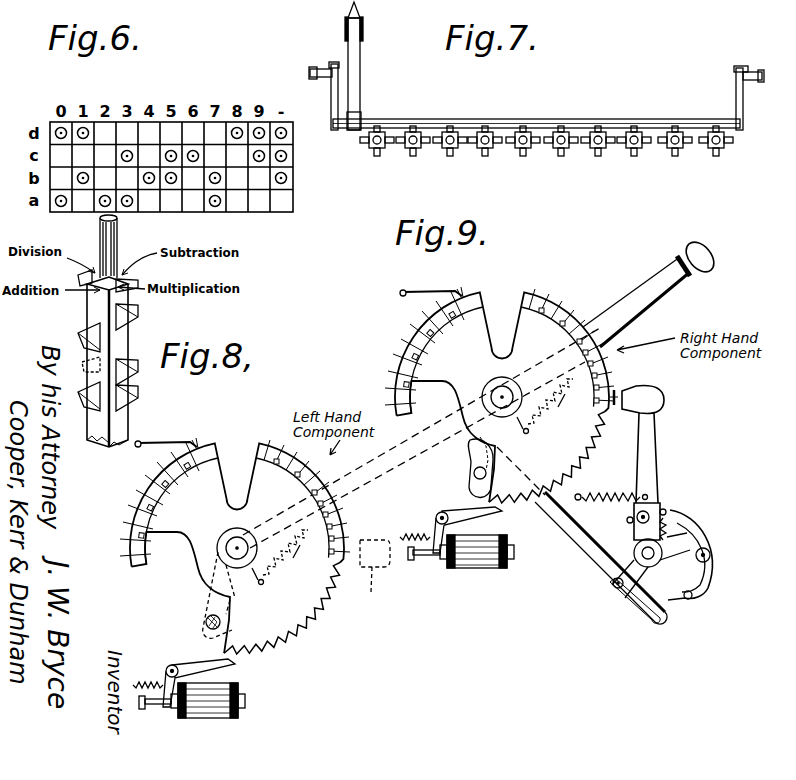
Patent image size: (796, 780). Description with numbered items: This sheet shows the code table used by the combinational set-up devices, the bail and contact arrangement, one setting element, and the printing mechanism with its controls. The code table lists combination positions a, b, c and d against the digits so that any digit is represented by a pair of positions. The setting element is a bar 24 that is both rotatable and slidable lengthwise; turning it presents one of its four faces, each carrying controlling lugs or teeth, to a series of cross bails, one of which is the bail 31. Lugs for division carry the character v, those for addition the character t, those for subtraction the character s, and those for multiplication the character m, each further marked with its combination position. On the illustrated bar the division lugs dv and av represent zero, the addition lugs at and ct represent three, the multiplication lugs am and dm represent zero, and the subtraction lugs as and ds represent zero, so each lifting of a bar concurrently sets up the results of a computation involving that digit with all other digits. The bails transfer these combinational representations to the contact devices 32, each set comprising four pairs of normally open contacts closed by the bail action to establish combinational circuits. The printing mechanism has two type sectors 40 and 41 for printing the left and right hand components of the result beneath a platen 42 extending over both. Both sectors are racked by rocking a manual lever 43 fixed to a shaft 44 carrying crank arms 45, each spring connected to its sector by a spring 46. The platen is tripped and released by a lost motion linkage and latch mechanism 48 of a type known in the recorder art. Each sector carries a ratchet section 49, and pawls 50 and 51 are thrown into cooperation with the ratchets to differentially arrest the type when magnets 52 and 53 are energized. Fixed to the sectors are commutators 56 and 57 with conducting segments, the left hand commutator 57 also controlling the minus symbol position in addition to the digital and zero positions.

In FIG. 8, the bar 24 is at (133, 432).
In FIG. 7, the bail 31 is at (505, 121).
In FIG. 7, the contact devices 32 is at (360, 72).
In FIG. 9, the type sector 40 is at (318, 496).
In FIG. 9, the type sector 41 is at (512, 391).
In FIG. 9, the platen 42 is at (652, 378).
In FIG. 9, the manual lever 43 is at (668, 290).
In FIG. 9, the shaft 44 is at (242, 546).
In FIG. 9, the crank arm 45 is at (206, 600).
In FIG. 9, the spring 46 is at (420, 484).
In FIG. 9, the lost motion linkage and latch mechanism 48 is at (685, 610).
In FIG. 9, the ratchet section 49 is at (312, 632).
In FIG. 9, the pawl 50 is at (500, 511).
In FIG. 9, the pawl 51 is at (236, 665).
In FIG. 9, the magnet 52 is at (478, 566).
In FIG. 9, the magnet 53 is at (210, 716).
In FIG. 9, the commutator 56 is at (398, 380).
In FIG. 9, the commutator 57 is at (133, 525).
In FIG. 7, the addition controlling lug t is at (415, 132).
In FIG. 7, the subtraction controlling lug s is at (400, 144).
In FIG. 7, the multiplication controlling lug m is at (413, 152).
In FIG. 7, the division controlling lug v is at (424, 142).
In FIG. 8, the division lug dv is at (80, 279).
In FIG. 8, the addition lug ct is at (87, 321).
In FIG. 8, the division lug av is at (81, 361).
In FIG. 8, the subtraction lug ds is at (135, 296).
In FIG. 8, the multiplication lug dm is at (133, 318).
In FIG. 8, the subtraction lug as is at (137, 373).
In FIG. 8, the multiplication lug am is at (137, 402).
In FIG. 8, the addition lug at is at (122, 427).